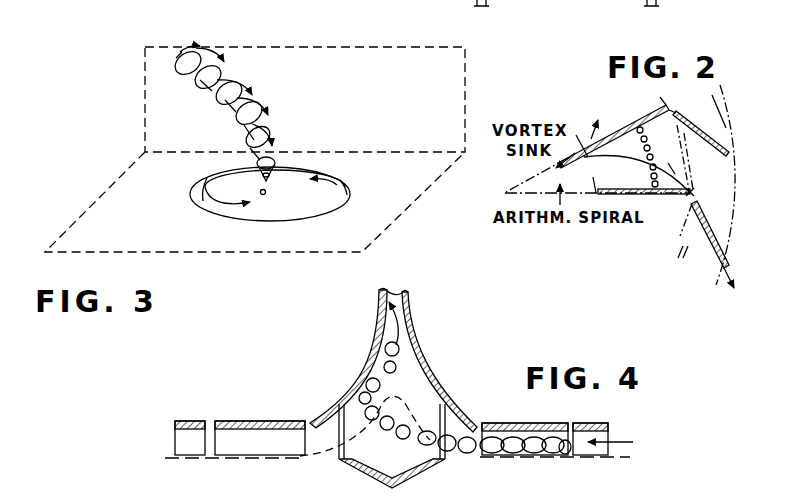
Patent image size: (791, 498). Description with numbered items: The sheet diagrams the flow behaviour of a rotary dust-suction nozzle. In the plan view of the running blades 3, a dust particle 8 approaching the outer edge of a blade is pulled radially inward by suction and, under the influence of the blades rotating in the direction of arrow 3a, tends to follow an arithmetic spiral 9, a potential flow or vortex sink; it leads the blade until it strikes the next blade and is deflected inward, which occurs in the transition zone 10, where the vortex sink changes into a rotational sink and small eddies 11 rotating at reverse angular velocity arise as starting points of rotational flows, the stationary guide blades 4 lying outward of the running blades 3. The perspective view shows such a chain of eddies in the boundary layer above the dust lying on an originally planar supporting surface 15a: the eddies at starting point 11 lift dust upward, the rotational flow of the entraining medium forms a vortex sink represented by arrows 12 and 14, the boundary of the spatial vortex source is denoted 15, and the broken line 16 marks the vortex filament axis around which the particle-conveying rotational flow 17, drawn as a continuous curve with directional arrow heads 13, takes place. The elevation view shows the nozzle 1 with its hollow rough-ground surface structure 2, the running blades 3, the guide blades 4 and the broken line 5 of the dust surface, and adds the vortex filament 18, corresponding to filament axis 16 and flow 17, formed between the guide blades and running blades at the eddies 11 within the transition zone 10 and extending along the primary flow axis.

In FIG. 4, the nozzle 1 is at (367, 353).
In FIG. 4, the surface structure 2 is at (421, 462).
In FIG. 2, the running blades 3 is at (668, 197).
In FIG. 4, the running blades 3 is at (266, 422).
In FIG. 2, the arrow 3a is at (563, 190).
In FIG. 2, the fixed guide blades 4 is at (706, 124).
In FIG. 4, the fixed guide blades 4 is at (201, 422).
In FIG. 4, the upper surface of dust mass 5 is at (304, 458).
In FIG. 2, the dust particle 8 is at (693, 192).
In FIG. 2, the arithmetic spiral 9 is at (616, 115).
In FIG. 2, the transition zone 10 is at (655, 150).
In FIG. 3, the small eddies 11 is at (274, 184).
In FIG. 2, the small eddies 11 is at (651, 108).
In FIG. 3, the arrow 12 is at (345, 193).
In FIG. 3, the directional arrow heads 13 is at (291, 160).
In FIG. 3, the arrow 14 is at (204, 191).
In FIG. 3, the boundary of spatial vortex source 15 is at (214, 217).
In FIG. 3, the supporting surface 15a is at (95, 212).
In FIG. 3, the vortex filament axis 16 is at (236, 75).
In FIG. 3, the rotational flow 17 is at (260, 98).
In FIG. 4, the vortex filament 18 is at (447, 433).